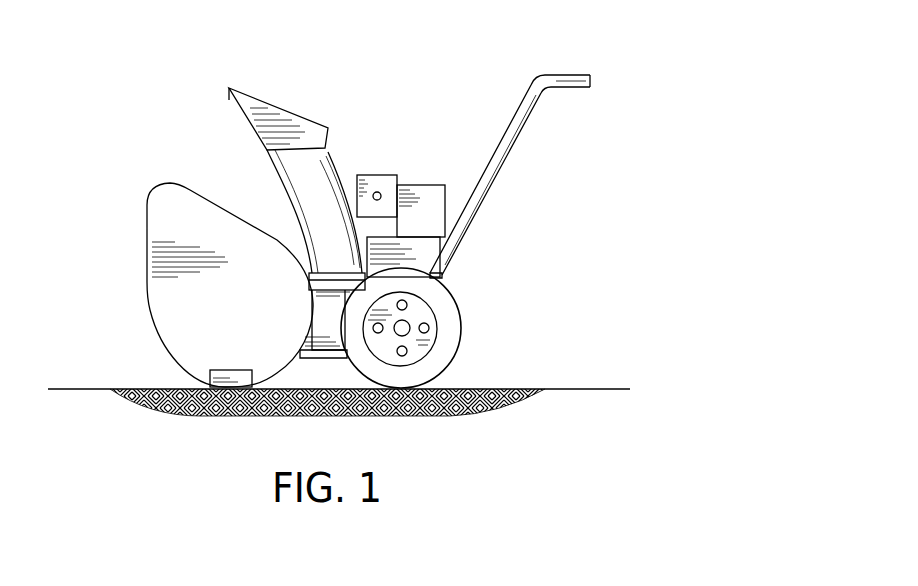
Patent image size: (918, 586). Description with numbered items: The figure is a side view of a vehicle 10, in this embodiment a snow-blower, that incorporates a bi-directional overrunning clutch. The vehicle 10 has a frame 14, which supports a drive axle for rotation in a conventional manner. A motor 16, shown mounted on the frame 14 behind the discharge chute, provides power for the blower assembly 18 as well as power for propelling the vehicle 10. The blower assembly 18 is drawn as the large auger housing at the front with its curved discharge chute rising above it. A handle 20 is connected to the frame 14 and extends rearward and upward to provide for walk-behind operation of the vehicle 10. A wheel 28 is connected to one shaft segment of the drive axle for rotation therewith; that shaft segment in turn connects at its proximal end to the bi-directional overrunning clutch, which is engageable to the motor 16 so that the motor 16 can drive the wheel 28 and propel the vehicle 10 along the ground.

The vehicle 10 is at (412, 165).
The frame 14 is at (322, 327).
The motor 16 is at (433, 230).
The blower assembly 18 is at (293, 188).
The handle 20 is at (567, 80).
The wheel 28 is at (450, 327).